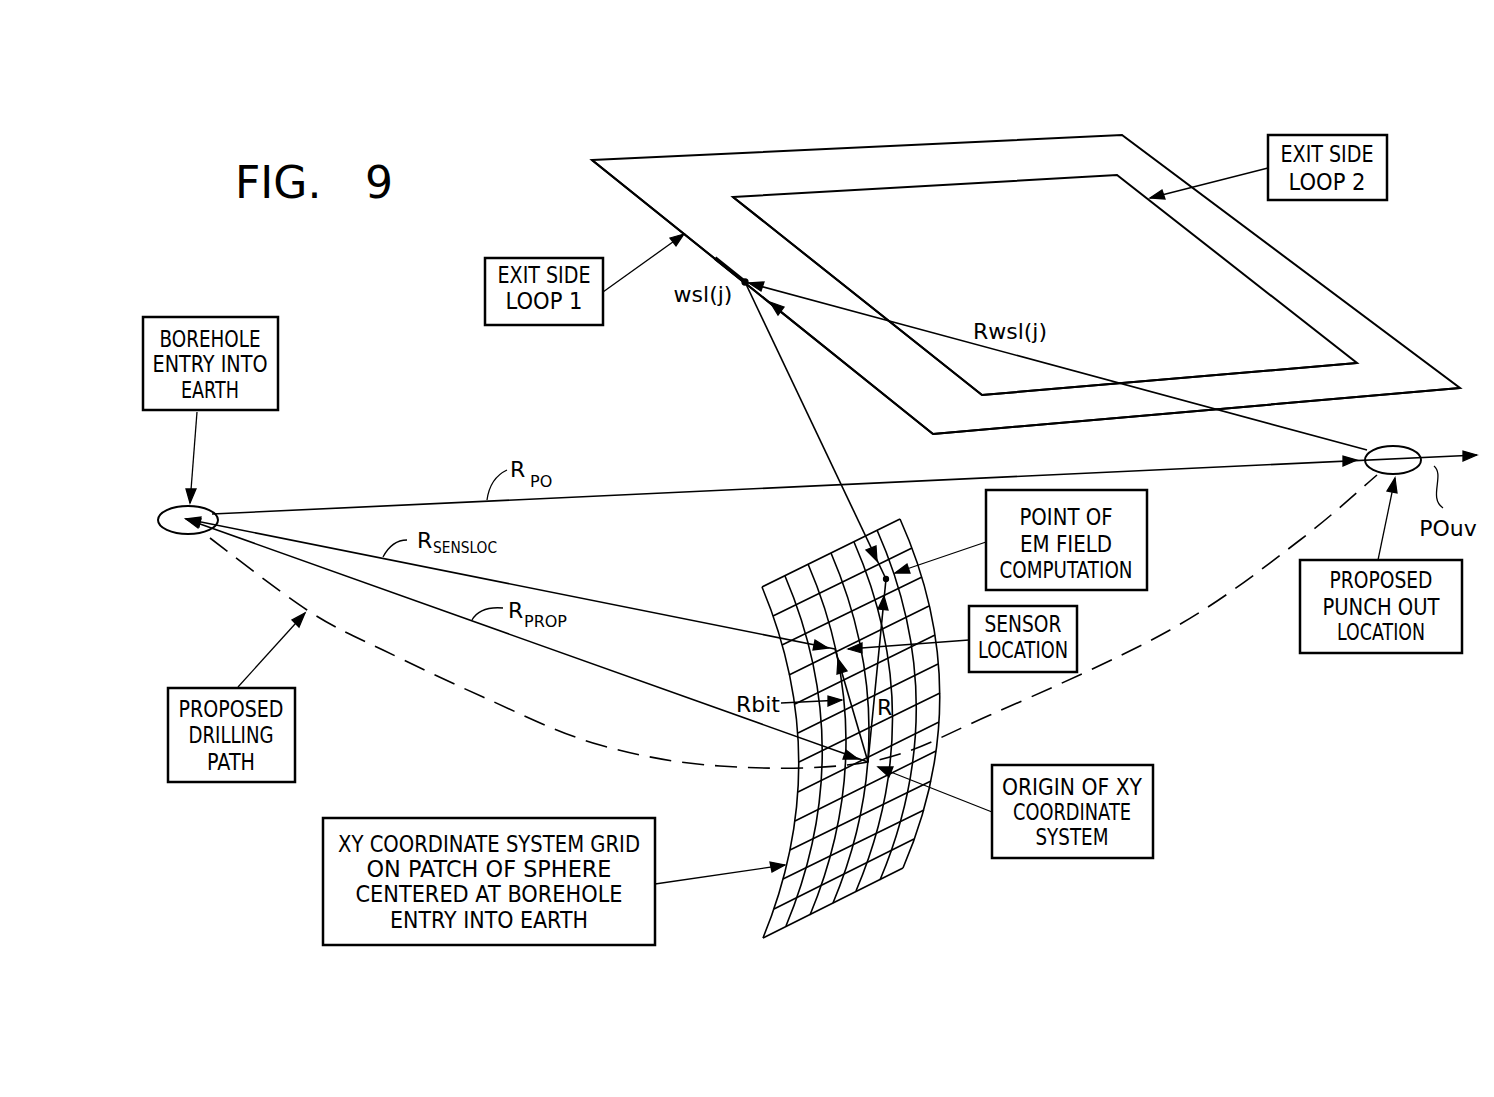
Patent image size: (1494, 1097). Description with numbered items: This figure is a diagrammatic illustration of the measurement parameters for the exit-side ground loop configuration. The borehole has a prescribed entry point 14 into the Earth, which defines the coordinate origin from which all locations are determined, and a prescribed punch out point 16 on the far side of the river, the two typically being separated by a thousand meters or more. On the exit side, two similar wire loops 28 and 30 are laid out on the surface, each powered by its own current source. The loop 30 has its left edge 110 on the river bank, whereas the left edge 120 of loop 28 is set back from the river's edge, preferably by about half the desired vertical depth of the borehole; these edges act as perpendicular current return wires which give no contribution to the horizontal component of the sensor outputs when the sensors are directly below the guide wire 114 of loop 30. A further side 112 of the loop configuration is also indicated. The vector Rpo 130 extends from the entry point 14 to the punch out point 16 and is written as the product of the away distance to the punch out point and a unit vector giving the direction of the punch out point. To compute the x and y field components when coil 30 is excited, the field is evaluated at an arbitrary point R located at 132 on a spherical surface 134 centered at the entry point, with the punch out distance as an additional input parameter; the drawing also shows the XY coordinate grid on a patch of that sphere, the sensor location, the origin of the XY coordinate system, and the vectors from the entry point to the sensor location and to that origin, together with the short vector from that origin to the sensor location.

The entry point 14 is at (195, 503).
The punch out point 16 is at (1396, 447).
The loop 28 is at (838, 200).
The loop 30 is at (677, 152).
The edge 110 is at (648, 207).
The side of loop 2 112 is at (1223, 373).
The guide wire 114 is at (1332, 398).
The left edge 120 is at (813, 263).
The vector Rpo 130 is at (460, 500).
The point R 132 is at (870, 572).
The spherical surface 134 is at (772, 578).